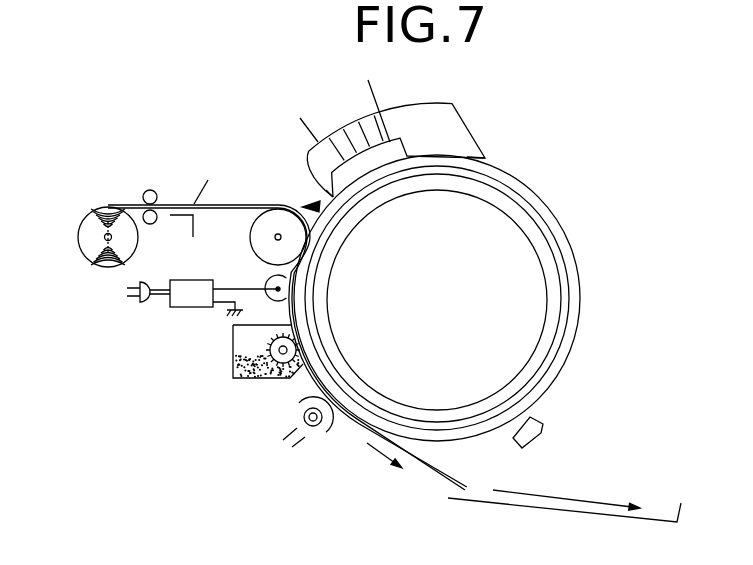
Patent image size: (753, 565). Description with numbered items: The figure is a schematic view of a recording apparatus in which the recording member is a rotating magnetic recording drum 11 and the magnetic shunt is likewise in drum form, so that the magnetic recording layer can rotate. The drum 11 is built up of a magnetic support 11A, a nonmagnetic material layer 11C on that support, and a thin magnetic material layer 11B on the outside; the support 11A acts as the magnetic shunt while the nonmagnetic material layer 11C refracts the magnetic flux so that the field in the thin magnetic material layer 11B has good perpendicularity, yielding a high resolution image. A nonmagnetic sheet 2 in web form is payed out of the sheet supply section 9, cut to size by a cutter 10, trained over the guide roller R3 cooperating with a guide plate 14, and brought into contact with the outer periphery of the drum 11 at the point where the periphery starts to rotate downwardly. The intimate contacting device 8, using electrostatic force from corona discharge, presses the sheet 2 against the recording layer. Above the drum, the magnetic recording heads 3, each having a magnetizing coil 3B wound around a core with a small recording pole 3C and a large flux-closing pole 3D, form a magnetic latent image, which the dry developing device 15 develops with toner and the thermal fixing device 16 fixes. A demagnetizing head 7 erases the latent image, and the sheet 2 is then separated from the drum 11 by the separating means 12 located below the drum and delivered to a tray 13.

The nonmagnetic sheet 2 is at (221, 205).
The magnetic recording heads 3 is at (402, 130).
The magnetizing coil 3B is at (380, 94).
The recording pole 3C is at (330, 196).
The flux-closing pole 3D is at (484, 157).
The demagnetizing head 7 is at (546, 426).
The intimate contacting device 8 is at (266, 280).
The sheet supply section 9 is at (78, 238).
The cutter 10 is at (193, 204).
The magnetic recording drum 11 is at (447, 256).
The magnetic support 11A is at (546, 277).
The thin magnetic material layer 11B is at (548, 216).
The nonmagnetic material layer 11C is at (568, 272).
The separating means 12 is at (426, 452).
The tray 13 is at (550, 509).
The guide plate 14 is at (303, 206).
The dry developing device 15 is at (232, 362).
The thermal fixing device 16 is at (297, 420).
The guide roller R3 is at (251, 233).